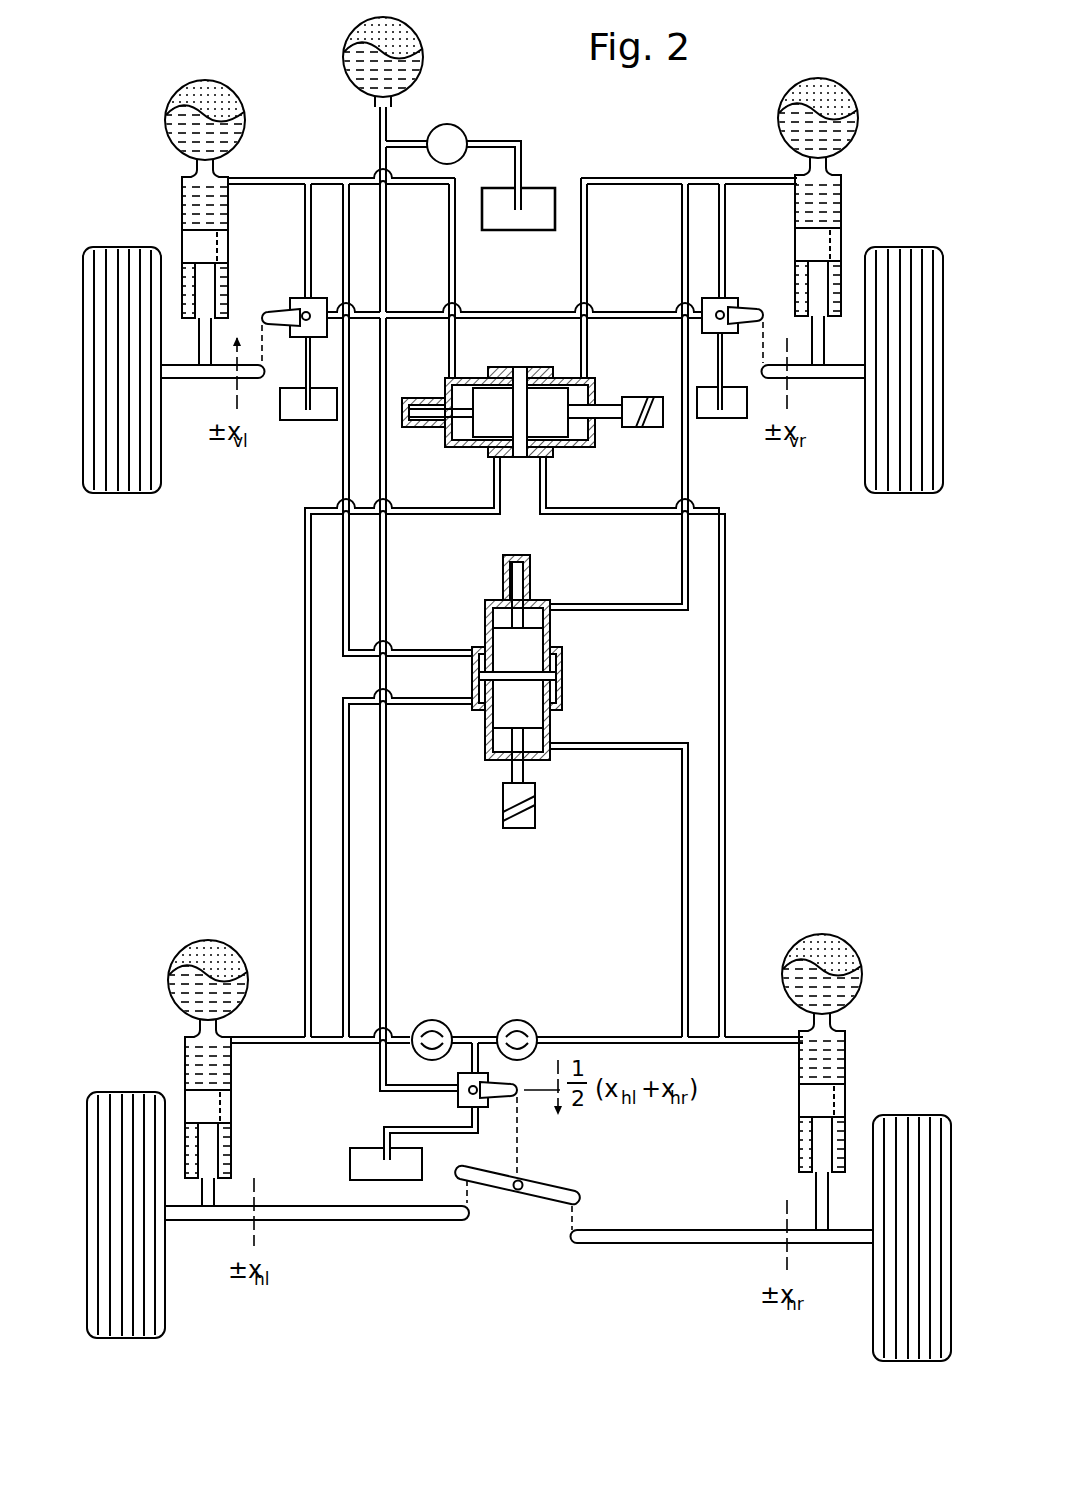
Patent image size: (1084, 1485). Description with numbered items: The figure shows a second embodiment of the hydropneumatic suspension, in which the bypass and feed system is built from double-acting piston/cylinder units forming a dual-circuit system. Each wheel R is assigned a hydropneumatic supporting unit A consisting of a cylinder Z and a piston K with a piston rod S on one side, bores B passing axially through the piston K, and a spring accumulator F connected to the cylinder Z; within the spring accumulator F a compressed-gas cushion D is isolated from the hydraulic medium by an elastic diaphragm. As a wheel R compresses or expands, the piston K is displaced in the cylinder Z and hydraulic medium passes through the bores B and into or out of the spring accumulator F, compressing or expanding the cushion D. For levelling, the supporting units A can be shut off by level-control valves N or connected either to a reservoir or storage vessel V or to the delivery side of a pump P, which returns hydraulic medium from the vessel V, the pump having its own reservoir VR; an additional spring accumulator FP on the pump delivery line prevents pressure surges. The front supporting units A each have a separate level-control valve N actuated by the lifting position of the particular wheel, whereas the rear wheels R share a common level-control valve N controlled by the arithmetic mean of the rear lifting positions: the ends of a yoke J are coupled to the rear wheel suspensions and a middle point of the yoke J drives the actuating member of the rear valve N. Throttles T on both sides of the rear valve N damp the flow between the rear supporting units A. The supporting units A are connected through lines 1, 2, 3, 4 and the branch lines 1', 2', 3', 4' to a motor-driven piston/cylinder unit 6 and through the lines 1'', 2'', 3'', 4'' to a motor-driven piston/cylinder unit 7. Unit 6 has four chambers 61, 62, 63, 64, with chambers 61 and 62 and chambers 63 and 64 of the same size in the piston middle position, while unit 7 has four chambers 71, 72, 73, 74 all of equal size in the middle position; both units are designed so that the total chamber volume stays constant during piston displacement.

The line 1 is at (689, 148).
The line 2 is at (341, 148).
The line 3 is at (320, 1004).
The line 4 is at (670, 1004).
The line 1' is at (611, 278).
The line 2' is at (430, 278).
The line 3' is at (402, 747).
The line 4' is at (632, 747).
The line 1'' is at (668, 398).
The line 2'' is at (352, 420).
The line 3'' is at (352, 863).
The line 4'' is at (670, 890).
The motor-driven piston/cylinder unit 6 is at (526, 366).
The chamber 61 is at (578, 435).
The chamber 62 is at (462, 435).
The chamber 63 is at (496, 372).
The chamber 64 is at (538, 372).
The motor-driven piston/cylinder unit 7 is at (566, 680).
The chamber 71 is at (552, 618).
The chamber 72 is at (478, 648).
The chamber 73 is at (478, 710).
The chamber 74 is at (552, 741).
The hydropneumatic supporting unit A is at (172, 165).
The wheel R is at (122, 255).
The level-control valve N is at (300, 298).
The reservoir or storage vessel V is at (308, 422).
The pump P is at (455, 130).
The pump reservoir VR is at (518, 232).
The additional spring accumulator FP is at (342, 43).
The spring accumulator F is at (188, 936).
The compressed-gas cushion D is at (222, 957).
The piston K is at (195, 1082).
The bores B is at (222, 1090).
The cylinder Z is at (232, 1138).
The piston rod S is at (205, 1200).
The throttle T is at (506, 1021).
The yoke J is at (540, 1185).